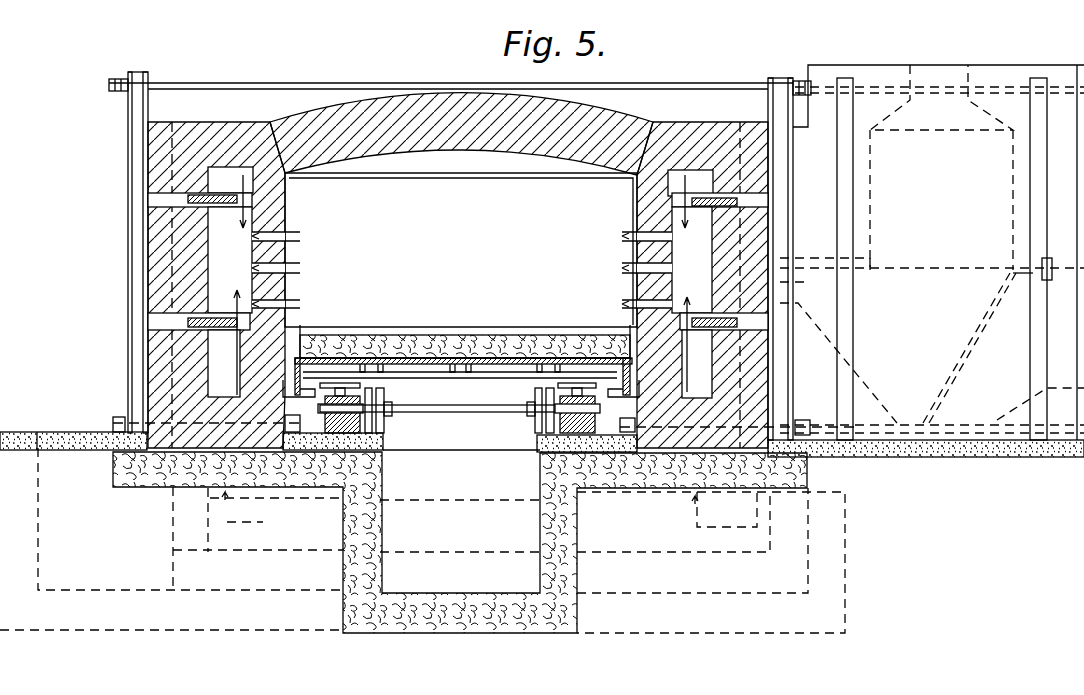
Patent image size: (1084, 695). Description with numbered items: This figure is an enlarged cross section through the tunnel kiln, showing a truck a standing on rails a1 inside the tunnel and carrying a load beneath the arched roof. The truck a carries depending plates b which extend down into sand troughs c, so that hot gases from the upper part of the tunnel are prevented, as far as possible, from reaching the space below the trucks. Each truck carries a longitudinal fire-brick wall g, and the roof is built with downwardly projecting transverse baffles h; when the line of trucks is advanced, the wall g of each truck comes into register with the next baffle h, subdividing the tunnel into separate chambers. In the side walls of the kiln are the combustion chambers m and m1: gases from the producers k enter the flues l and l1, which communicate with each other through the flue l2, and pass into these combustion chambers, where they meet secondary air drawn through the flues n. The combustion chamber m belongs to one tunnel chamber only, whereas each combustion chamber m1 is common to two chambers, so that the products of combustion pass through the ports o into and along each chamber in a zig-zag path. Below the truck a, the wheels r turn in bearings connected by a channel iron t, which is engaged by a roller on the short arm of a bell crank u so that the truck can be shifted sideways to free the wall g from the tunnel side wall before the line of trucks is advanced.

The truck a is at (414, 343).
The rails a1 is at (537, 433).
The depending plates b is at (305, 372).
The sand troughs c is at (310, 420).
The fire-brick wall g is at (461, 250).
The baffle h is at (452, 158).
The producer k is at (932, 252).
The flue l is at (724, 347).
The flue l1 is at (572, 409).
The flue l2 is at (445, 504).
The combustion chamber m is at (720, 244).
The combustion chamber m1 is at (200, 244).
The flues n is at (460, 181).
The ports o is at (300, 290).
The axle q is at (455, 411).
The wheels r is at (378, 393).
The channel iron t is at (340, 420).
The bell crank u is at (199, 343).